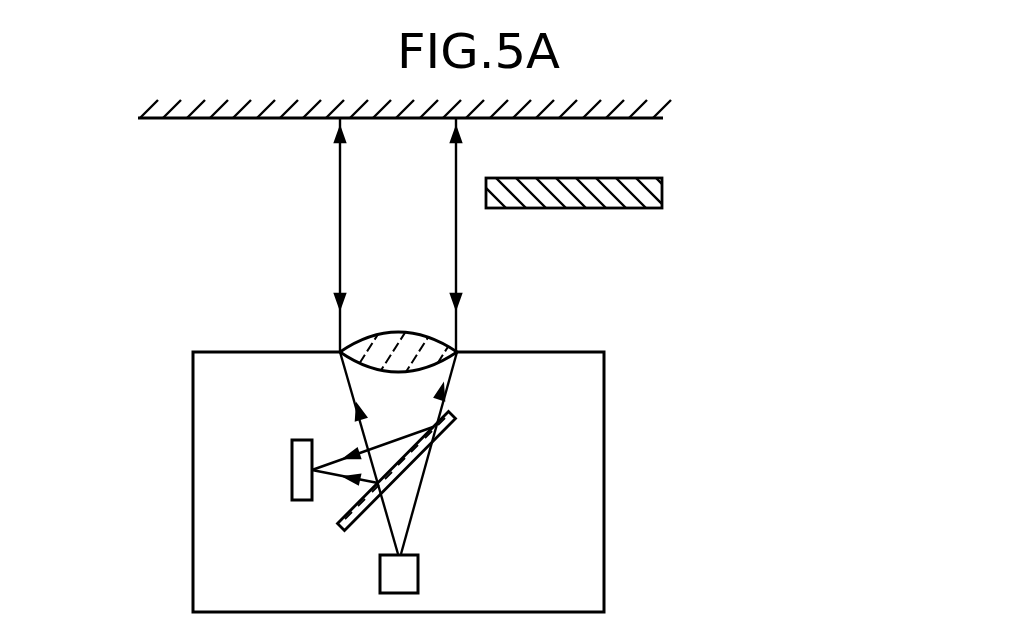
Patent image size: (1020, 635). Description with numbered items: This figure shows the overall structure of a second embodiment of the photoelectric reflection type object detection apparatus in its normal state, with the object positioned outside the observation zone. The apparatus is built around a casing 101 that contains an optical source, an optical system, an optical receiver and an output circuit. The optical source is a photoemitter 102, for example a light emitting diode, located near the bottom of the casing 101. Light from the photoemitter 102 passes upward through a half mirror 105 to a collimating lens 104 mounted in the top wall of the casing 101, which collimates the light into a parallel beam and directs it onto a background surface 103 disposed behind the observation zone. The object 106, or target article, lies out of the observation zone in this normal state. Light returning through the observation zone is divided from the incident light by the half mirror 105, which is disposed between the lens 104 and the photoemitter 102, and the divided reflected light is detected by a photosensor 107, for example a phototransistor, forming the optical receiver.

The casing 101 is at (604, 375).
The photoemitter 102 is at (418, 568).
The background surface 103 is at (547, 118).
The collimating lens 104 is at (433, 340).
The half mirror 105 is at (455, 416).
The object 106 is at (613, 200).
The photosensor 107 is at (292, 465).